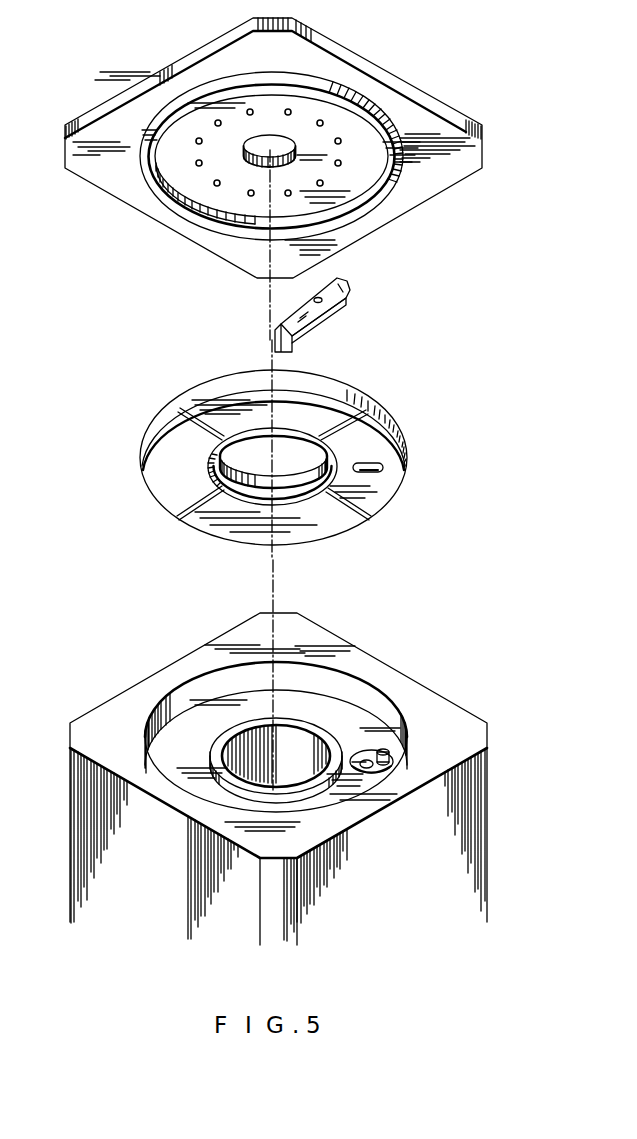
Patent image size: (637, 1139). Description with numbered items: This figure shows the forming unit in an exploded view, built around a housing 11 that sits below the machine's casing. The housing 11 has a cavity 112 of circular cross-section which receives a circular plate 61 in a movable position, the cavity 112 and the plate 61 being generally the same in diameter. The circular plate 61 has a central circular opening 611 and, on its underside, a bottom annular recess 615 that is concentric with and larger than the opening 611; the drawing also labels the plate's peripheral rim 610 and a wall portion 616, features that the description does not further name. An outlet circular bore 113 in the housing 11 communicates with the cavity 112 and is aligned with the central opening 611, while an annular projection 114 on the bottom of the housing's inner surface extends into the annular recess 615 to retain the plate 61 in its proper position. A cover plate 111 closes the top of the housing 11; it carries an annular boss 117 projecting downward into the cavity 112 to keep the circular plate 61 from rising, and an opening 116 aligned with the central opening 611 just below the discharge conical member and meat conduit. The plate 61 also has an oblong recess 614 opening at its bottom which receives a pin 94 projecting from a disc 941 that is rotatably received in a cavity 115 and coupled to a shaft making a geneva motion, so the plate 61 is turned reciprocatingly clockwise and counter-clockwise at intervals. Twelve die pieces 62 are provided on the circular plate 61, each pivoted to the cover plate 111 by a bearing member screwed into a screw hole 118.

The cover plate 111 is at (368, 68).
The annular boss 117 is at (385, 136).
The screw hole 118 is at (341, 166).
The opening 116 is at (262, 144).
The die piece 62 is at (330, 314).
The circular plate 61 is at (195, 380).
The peripheral rim 610 is at (227, 380).
The rim wall 616 is at (378, 428).
The oblong recess 614 is at (384, 468).
The bottom annular recess 615 is at (327, 480).
The central circular opening 611 is at (310, 492).
The housing 11 is at (475, 710).
The cavity 112 is at (333, 712).
The outlet circular bore 113 is at (248, 750).
The annular projection 114 is at (223, 740).
The pin 94 is at (393, 737).
The disc 941 is at (368, 770).
The cavity 115 is at (378, 752).